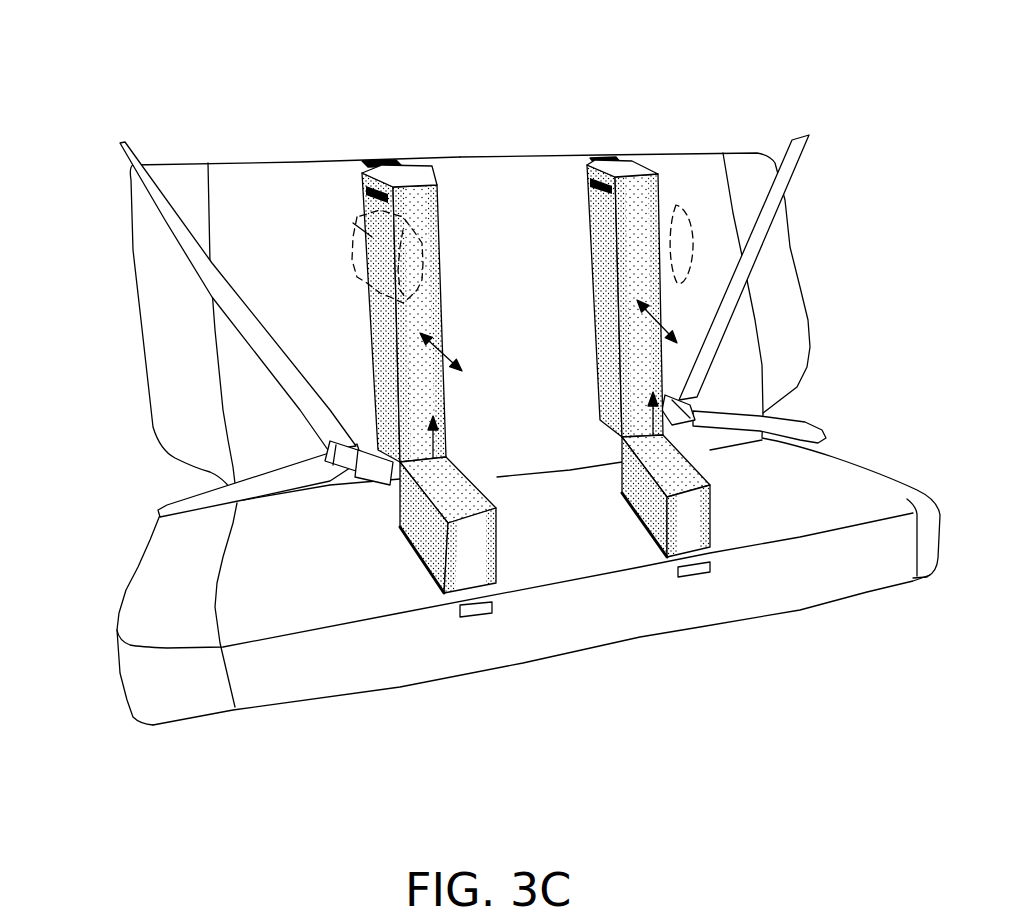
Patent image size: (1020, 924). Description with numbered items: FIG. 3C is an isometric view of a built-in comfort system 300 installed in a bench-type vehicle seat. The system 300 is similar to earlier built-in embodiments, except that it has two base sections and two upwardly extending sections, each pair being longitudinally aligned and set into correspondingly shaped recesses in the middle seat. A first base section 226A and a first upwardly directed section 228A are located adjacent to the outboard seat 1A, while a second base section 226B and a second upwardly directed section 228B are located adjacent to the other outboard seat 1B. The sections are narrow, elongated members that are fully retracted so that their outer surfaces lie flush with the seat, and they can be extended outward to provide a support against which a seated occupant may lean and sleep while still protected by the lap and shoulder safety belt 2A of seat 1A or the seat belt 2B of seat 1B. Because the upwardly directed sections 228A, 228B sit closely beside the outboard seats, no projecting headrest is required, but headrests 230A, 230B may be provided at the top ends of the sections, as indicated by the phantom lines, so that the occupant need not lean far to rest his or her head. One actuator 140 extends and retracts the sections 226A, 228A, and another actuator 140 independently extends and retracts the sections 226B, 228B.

The comfort system 300 is at (402, 118).
The seat 1A is at (252, 230).
The seat 1B is at (707, 172).
The lap and shoulder safety belt 2A is at (257, 339).
The seat belt 2B is at (762, 235).
The first upwardly directed section 228A is at (390, 365).
The second upwardly directed section 228B is at (607, 360).
The first base section 226A is at (423, 532).
The second base section 226B is at (695, 517).
The headrest 230A is at (357, 217).
The headrest 230B is at (672, 210).
The actuator 140 is at (475, 617).